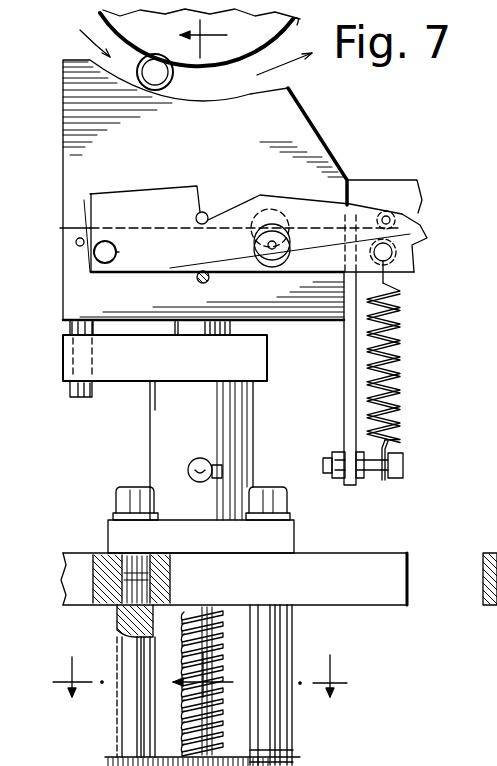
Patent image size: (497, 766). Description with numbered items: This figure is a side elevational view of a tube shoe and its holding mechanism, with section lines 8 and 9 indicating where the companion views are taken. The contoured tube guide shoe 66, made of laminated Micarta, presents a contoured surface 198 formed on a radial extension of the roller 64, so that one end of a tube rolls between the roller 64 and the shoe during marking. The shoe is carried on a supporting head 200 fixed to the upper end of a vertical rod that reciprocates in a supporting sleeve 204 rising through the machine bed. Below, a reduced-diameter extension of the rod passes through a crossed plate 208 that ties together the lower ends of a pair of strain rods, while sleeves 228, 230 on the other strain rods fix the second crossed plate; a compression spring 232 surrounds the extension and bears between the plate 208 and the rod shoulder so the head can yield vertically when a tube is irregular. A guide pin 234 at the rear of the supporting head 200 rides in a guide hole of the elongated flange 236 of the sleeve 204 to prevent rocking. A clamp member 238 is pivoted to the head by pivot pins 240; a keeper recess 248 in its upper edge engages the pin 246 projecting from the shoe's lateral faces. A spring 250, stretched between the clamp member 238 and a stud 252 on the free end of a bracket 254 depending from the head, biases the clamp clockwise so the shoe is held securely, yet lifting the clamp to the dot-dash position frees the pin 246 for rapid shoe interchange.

The section line 8- 8 is at (210, 358).
The section line 9- 9 is at (200, 690).
The roller 64 is at (277, 28).
The contoured tube guide shoe 66 is at (68, 103).
The contoured surface 198 is at (219, 88).
The supporting head 200 is at (63, 305).
The supporting sleeve 204 is at (238, 415).
The crossed plate 208 is at (279, 659).
The sleeve 228 is at (127, 740).
The sleeve 230 is at (290, 733).
The compression spring 232 is at (222, 737).
The guide pin 234 is at (78, 395).
The elongated flange 236 is at (63, 362).
The clamp member 238 is at (402, 226).
The pivot pin 240 is at (119, 252).
The pin 246 is at (214, 212).
The keeper recess 248 is at (199, 212).
The spring 250 is at (400, 353).
The stud 252 is at (403, 465).
The bracket 254 is at (345, 394).